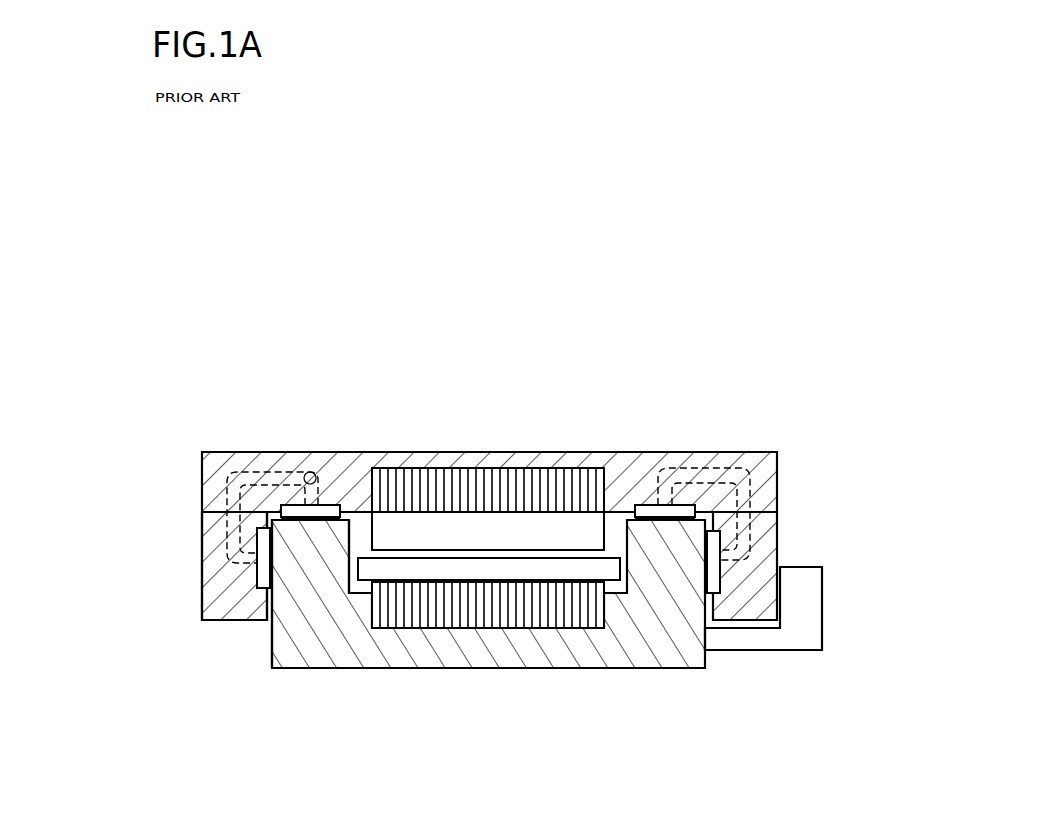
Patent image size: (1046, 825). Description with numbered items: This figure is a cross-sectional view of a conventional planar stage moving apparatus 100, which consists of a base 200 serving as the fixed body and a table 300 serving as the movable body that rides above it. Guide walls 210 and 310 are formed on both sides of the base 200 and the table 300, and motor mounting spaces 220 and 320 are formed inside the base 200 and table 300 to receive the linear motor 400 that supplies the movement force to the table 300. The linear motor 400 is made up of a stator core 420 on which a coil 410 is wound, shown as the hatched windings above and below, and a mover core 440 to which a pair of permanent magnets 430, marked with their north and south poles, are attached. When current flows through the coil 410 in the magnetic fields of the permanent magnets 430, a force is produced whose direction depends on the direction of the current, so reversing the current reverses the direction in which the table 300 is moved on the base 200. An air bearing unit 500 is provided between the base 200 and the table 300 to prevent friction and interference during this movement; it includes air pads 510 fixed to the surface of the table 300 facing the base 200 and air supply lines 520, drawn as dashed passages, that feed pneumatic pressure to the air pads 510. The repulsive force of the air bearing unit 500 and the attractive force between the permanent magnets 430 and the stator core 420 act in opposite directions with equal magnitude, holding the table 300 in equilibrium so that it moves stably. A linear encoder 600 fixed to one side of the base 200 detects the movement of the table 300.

The stage moving apparatus 100 is at (130, 450).
The base 200 is at (497, 643).
The guide wall 210 is at (307, 608).
The motor mounting space 220 is at (367, 538).
The table 300 is at (722, 462).
The guide wall 310 is at (228, 585).
The motor mounting space 320 is at (367, 538).
The linear motor 400 is at (618, 385).
The coil 410 is at (417, 568).
The stator core 420 is at (457, 603).
The permanent magnet 430 is at (512, 530).
The mover core 440 is at (567, 483).
The air bearing unit 500 is at (303, 362).
The air pad 510 is at (288, 506).
The air supply line 520 is at (255, 470).
The linear encoder 600 is at (805, 597).